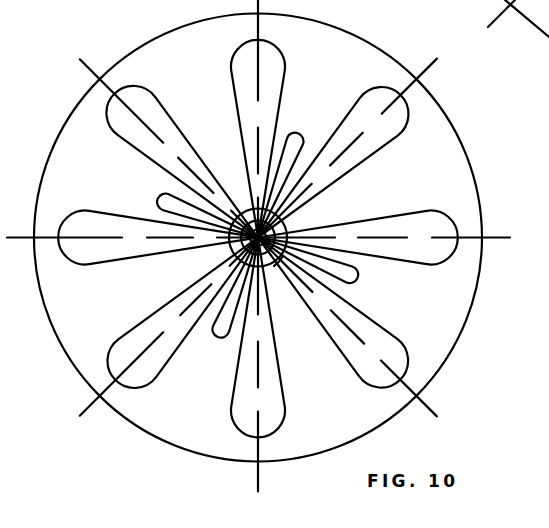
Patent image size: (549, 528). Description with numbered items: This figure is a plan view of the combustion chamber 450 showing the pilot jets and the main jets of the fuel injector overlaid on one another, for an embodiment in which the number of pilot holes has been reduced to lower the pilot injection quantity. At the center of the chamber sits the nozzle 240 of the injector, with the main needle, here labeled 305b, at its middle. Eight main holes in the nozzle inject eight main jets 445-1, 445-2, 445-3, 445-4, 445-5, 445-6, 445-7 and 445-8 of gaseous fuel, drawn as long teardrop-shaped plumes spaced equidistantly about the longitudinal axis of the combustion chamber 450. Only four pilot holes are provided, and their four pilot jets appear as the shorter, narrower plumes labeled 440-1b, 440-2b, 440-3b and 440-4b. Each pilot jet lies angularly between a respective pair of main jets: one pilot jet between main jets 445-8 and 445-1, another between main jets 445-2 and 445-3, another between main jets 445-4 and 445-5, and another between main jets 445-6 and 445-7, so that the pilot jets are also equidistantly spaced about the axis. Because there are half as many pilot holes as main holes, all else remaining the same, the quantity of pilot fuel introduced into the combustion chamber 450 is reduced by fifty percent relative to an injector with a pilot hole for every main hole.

The combustion chamber 450 is at (223, 118).
The nozzle 240 is at (276, 213).
The main jet 445-1 is at (386, 211).
The main jet 445-2 is at (385, 83).
The main jet 445-3 is at (232, 72).
The main jet 445-4 is at (117, 140).
The main jet 445-5 is at (88, 264).
The main jet 445-6 is at (128, 387).
The main jet 445-7 is at (285, 406).
The main jet 445-8 is at (422, 327).
The secondary blade 440-1b is at (360, 272).
The secondary blade 440-2b is at (295, 132).
The secondary blade 440-3b is at (158, 196).
The secondary blade 440-4b is at (214, 339).
The hub spoke 305b is at (274, 266).